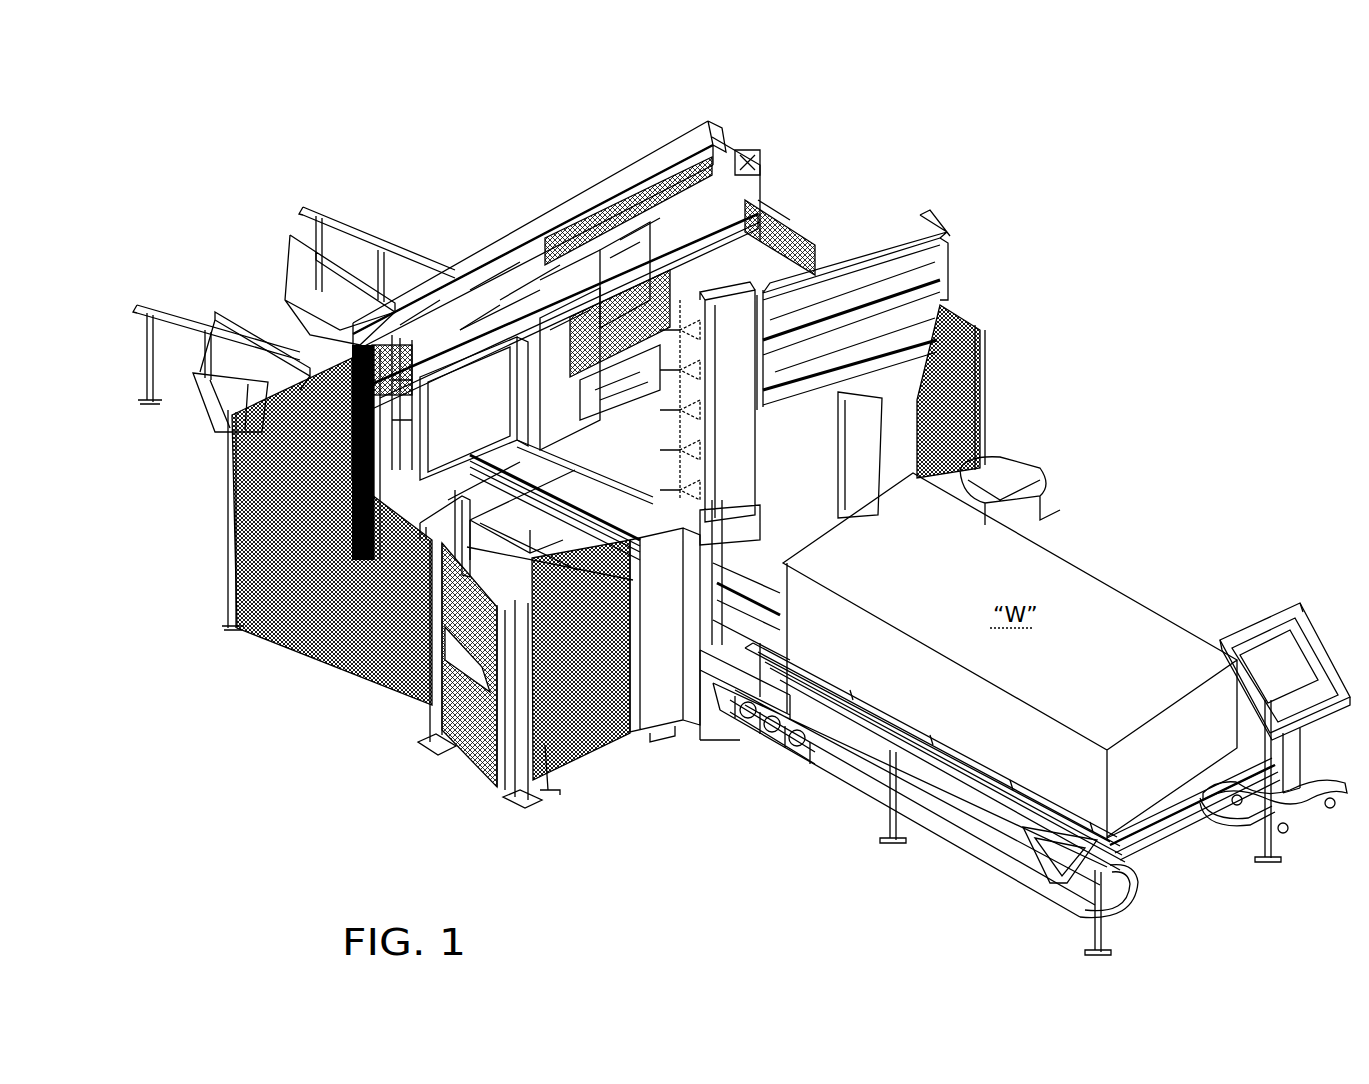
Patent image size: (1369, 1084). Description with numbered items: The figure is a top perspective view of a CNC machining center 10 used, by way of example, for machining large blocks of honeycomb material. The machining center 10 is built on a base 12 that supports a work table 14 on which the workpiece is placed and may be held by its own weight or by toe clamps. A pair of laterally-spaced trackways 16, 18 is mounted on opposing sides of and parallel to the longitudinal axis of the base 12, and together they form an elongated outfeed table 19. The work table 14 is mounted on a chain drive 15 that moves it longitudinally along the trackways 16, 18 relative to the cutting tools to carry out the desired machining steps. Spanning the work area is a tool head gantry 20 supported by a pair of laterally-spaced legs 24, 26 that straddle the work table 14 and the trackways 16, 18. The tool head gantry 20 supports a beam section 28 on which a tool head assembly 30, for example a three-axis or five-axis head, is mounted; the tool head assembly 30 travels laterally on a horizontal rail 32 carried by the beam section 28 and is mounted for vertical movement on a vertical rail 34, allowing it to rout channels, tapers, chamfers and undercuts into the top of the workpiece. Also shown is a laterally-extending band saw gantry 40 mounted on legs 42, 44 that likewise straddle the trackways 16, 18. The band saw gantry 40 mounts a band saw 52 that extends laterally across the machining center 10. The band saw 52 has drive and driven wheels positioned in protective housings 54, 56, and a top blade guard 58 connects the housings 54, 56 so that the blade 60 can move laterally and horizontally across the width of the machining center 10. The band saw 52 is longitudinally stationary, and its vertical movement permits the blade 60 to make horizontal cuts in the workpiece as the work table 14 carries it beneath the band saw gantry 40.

The CNC machining center 10 is at (428, 124).
The base 12 is at (1000, 873).
The work table 14 is at (985, 783).
The chain drive 15 is at (763, 518).
The trackway 16 is at (228, 332).
The trackway 18 is at (293, 312).
The outfeed table 19 is at (116, 355).
The tool head gantry 20 is at (896, 262).
The leg 24 is at (670, 663).
The leg 26 is at (987, 493).
The beam section 28 is at (980, 388).
The tool head assembly 30 is at (810, 272).
The horizontal rail 32 is at (947, 265).
The vertical rail 34 is at (842, 458).
The band saw gantry 40 is at (588, 207).
The leg 42 is at (272, 632).
The leg 44 is at (790, 218).
The band saw 52 is at (521, 258).
The protective housing 54 is at (493, 417).
The protective housing 56 is at (745, 256).
The top blade guard 58 is at (633, 260).
The blade 60 is at (574, 400).